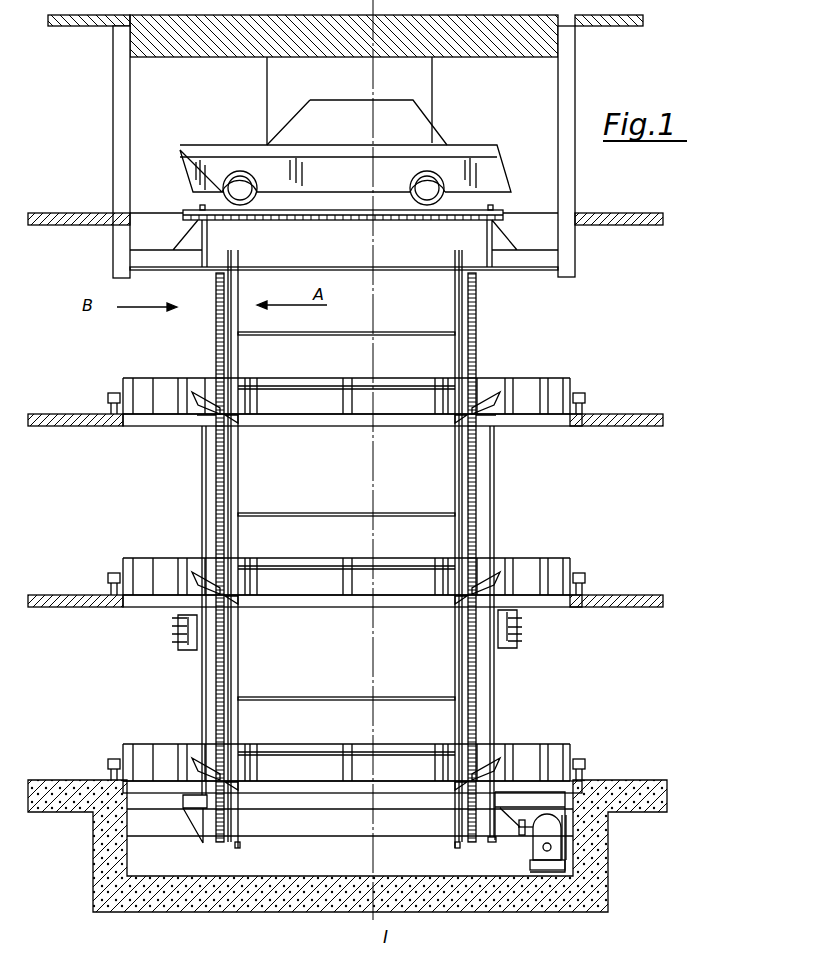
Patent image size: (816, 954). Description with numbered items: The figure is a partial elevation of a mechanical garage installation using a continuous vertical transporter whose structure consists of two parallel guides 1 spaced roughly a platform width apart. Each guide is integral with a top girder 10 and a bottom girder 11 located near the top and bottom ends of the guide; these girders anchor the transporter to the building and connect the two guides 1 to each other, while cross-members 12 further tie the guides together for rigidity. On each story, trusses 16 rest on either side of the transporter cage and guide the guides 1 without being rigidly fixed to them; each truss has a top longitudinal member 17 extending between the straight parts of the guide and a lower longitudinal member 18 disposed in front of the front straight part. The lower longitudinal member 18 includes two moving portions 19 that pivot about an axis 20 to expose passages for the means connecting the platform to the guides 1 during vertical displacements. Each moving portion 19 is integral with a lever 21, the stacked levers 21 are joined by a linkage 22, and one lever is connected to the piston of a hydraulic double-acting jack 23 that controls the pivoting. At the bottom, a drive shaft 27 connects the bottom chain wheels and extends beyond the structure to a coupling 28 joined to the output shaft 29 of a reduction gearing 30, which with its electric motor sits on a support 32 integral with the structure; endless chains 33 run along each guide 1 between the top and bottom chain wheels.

The guide 1 is at (240, 457).
The top girder 10 is at (353, 270).
The bottom girder 11 is at (354, 809).
The cross-member 12 is at (347, 332).
The truss 16 is at (254, 400).
The top longitudinal member 17 is at (398, 386).
The lower longitudinal member 18 is at (408, 422).
The moving portion 19 is at (240, 424).
The axis 20 is at (198, 421).
The lever 21 is at (195, 393).
The linkage 22 is at (202, 681).
The hydraulic double-acting jack 23 is at (176, 629).
The drive shaft 27 is at (318, 836).
The coupling 28 is at (526, 835).
The output shaft 29 is at (529, 849).
The reduction gearing 30 is at (553, 847).
The support 32 is at (548, 872).
The endless chain 33 is at (216, 313).